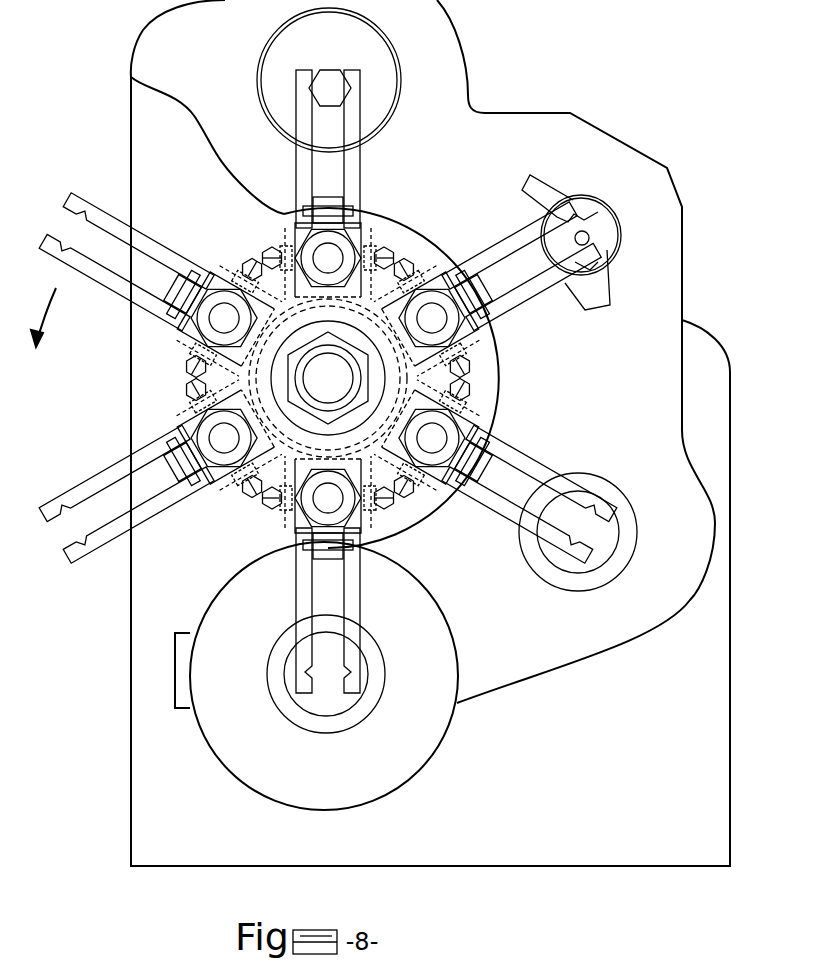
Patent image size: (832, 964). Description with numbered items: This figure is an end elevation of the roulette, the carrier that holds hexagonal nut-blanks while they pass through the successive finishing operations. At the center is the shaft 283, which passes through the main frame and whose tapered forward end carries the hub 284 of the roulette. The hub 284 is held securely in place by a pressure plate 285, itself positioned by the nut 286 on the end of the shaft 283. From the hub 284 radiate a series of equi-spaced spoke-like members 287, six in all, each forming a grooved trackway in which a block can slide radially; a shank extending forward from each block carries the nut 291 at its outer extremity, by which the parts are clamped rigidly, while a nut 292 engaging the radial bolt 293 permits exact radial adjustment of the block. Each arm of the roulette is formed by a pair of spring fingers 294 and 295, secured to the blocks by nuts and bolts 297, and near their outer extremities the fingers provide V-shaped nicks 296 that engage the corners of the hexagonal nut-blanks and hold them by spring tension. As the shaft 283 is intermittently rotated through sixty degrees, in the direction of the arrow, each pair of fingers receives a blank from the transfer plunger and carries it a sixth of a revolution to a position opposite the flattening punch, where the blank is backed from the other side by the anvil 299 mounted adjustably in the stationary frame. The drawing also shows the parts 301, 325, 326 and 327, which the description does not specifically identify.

The shaft 283 is at (328, 378).
The hub 284 is at (332, 378).
The pressure plate 285 is at (314, 333).
The nut 286 is at (352, 358).
The radiating spoke-like members 287 is at (296, 237).
The nut 291 is at (495, 336).
The nut 292 is at (350, 206).
The radial bolt 293 is at (330, 196).
The spring finger 294 is at (305, 175).
The spring finger 295 is at (356, 172).
The V-shaped nicks 296 is at (86, 218).
The nuts and bolts 297 is at (362, 230).
The anvil 299 is at (326, 674).
The side roller 301 is at (578, 532).
The latch lever 325 is at (603, 220).
The latch pivot 326 is at (589, 238).
The upper roller 327 is at (329, 80).